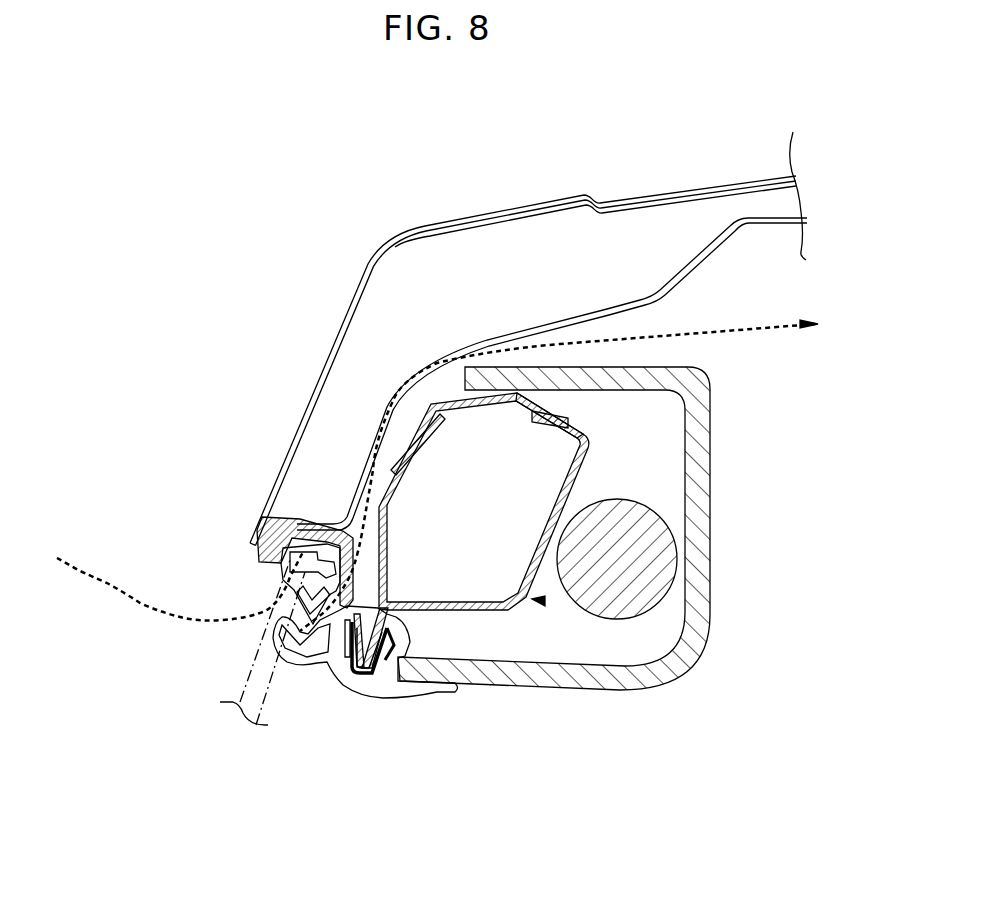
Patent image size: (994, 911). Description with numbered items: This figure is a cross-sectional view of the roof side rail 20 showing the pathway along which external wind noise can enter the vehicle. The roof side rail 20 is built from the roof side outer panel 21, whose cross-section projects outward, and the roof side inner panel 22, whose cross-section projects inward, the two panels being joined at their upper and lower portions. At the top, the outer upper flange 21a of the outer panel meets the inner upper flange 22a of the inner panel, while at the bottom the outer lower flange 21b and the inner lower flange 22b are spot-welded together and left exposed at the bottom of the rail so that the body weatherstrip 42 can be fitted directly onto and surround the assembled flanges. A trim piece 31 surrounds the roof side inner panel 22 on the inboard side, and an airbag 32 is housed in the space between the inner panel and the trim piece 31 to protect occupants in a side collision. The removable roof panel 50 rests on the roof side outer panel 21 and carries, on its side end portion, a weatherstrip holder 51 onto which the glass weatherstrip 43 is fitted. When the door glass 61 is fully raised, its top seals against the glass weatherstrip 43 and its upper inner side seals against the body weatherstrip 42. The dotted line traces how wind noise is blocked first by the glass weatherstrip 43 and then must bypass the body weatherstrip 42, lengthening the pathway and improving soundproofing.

The roof side rail 20 is at (542, 601).
The roof side outer panel 21 is at (410, 453).
The outer upper flange 21a is at (560, 402).
The outer lower flange 21b is at (354, 594).
The roof side inner panel 22 is at (522, 603).
The inner upper flange 22a is at (553, 413).
The inner lower flange 22b is at (390, 663).
The trim piece 31 is at (697, 520).
The airbag 32 is at (637, 568).
The body weatherstrip 42 is at (332, 695).
The glass weatherstrip 43 is at (283, 582).
The roof panel 50 is at (427, 258).
The weatherstrip holder 51 is at (310, 518).
The door glass 61 is at (262, 660).